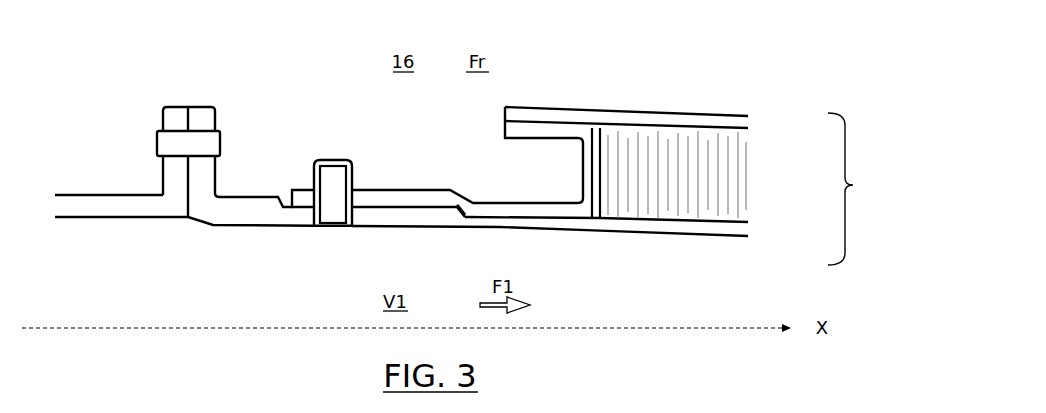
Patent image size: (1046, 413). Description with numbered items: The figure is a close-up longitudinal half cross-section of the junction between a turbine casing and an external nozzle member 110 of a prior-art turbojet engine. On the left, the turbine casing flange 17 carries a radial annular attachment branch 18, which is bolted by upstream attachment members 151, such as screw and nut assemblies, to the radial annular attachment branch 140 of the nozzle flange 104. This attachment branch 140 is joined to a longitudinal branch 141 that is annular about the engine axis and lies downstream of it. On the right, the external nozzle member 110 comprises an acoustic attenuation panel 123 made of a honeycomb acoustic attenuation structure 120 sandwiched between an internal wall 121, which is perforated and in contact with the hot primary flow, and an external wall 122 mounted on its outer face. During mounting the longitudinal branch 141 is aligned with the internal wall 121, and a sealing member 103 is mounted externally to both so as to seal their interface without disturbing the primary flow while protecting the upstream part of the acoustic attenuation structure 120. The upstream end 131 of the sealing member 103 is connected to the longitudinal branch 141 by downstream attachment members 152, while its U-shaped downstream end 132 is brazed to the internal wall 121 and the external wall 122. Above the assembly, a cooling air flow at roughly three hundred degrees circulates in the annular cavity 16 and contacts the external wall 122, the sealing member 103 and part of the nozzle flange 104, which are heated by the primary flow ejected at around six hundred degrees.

The annular cavity 16 is at (403, 61).
The turbine casing flange 17 is at (90, 183).
The radial annular attachment branch 18 is at (162, 125).
The upstream attachment members 151 is at (225, 147).
The radial annular attachment branch 140 is at (215, 180).
The nozzle flange 104 is at (220, 232).
The longitudinal branch 141 is at (277, 229).
The downstream attachment members 152 is at (330, 158).
The upstream end 131 is at (434, 190).
The downstream end 132 is at (580, 176).
The sealing member 103 is at (600, 162).
The external nozzle member 110 is at (647, 148).
The external wall 122 is at (748, 120).
The acoustic attenuation structure 120 is at (748, 173).
The internal wall 121 is at (748, 230).
The acoustic attenuation panel 123 is at (863, 189).